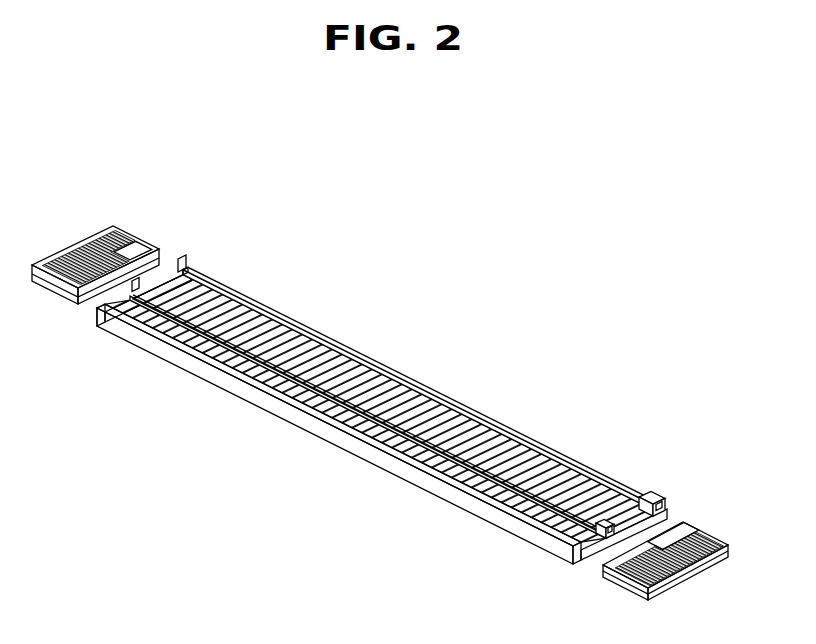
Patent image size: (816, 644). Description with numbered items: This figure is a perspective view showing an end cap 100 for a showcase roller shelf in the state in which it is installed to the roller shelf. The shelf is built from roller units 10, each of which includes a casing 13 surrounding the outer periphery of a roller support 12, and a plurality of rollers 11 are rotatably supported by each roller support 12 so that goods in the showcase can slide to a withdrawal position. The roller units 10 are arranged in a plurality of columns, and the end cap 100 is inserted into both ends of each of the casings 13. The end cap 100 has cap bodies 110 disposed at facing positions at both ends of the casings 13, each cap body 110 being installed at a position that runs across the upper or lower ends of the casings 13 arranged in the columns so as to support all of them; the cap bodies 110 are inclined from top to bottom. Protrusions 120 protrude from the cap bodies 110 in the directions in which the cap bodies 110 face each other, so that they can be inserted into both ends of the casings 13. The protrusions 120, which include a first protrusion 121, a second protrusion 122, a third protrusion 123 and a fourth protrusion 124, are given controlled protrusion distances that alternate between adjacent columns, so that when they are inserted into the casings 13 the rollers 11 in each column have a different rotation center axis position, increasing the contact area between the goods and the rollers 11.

The roller unit 10 is at (382, 409).
The roller 11 is at (385, 363).
The roller support 12 is at (645, 496).
The casing 13 is at (323, 433).
The end cap 100 is at (413, 392).
The cap body 110 is at (69, 250).
The protrusion 120 is at (418, 404).
The first protrusion 121 is at (162, 272).
The second protrusion 122 is at (716, 534).
The third protrusion 123 is at (153, 250).
The fourth protrusion 124 is at (690, 521).